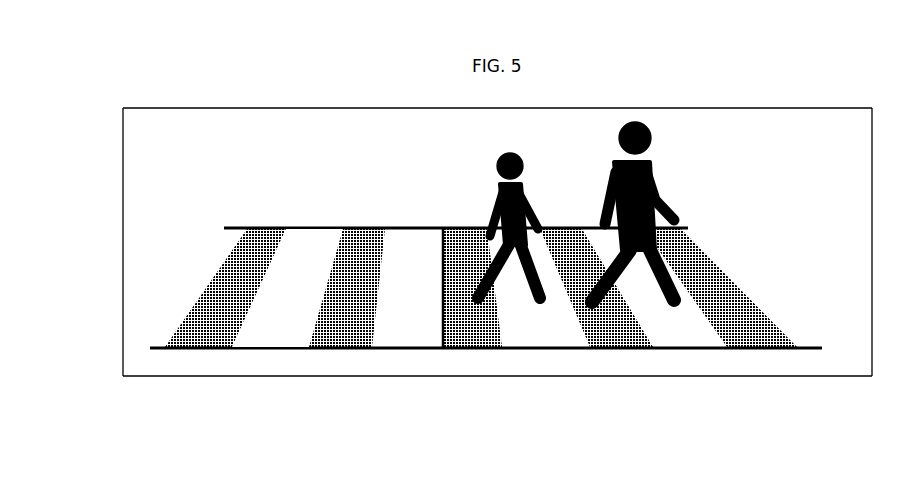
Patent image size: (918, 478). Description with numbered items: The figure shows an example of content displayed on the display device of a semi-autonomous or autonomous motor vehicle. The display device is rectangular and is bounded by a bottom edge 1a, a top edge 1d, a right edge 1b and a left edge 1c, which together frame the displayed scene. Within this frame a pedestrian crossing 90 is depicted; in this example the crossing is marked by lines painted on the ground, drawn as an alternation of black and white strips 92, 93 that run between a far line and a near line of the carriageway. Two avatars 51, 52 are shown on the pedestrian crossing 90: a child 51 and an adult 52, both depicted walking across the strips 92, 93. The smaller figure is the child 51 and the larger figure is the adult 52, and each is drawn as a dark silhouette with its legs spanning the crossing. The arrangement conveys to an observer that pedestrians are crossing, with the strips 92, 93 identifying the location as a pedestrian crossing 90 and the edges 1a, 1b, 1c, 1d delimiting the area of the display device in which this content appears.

The bottom edge 1a is at (443, 376).
The right edge 1b is at (872, 167).
The left edge 1c is at (122, 332).
The top edge 1d is at (250, 108).
The child avatar 51 is at (498, 172).
The adult avatar 52 is at (651, 168).
The pedestrian crossing 90 is at (486, 259).
The black strip 92 is at (321, 238).
The white strip 93 is at (271, 228).